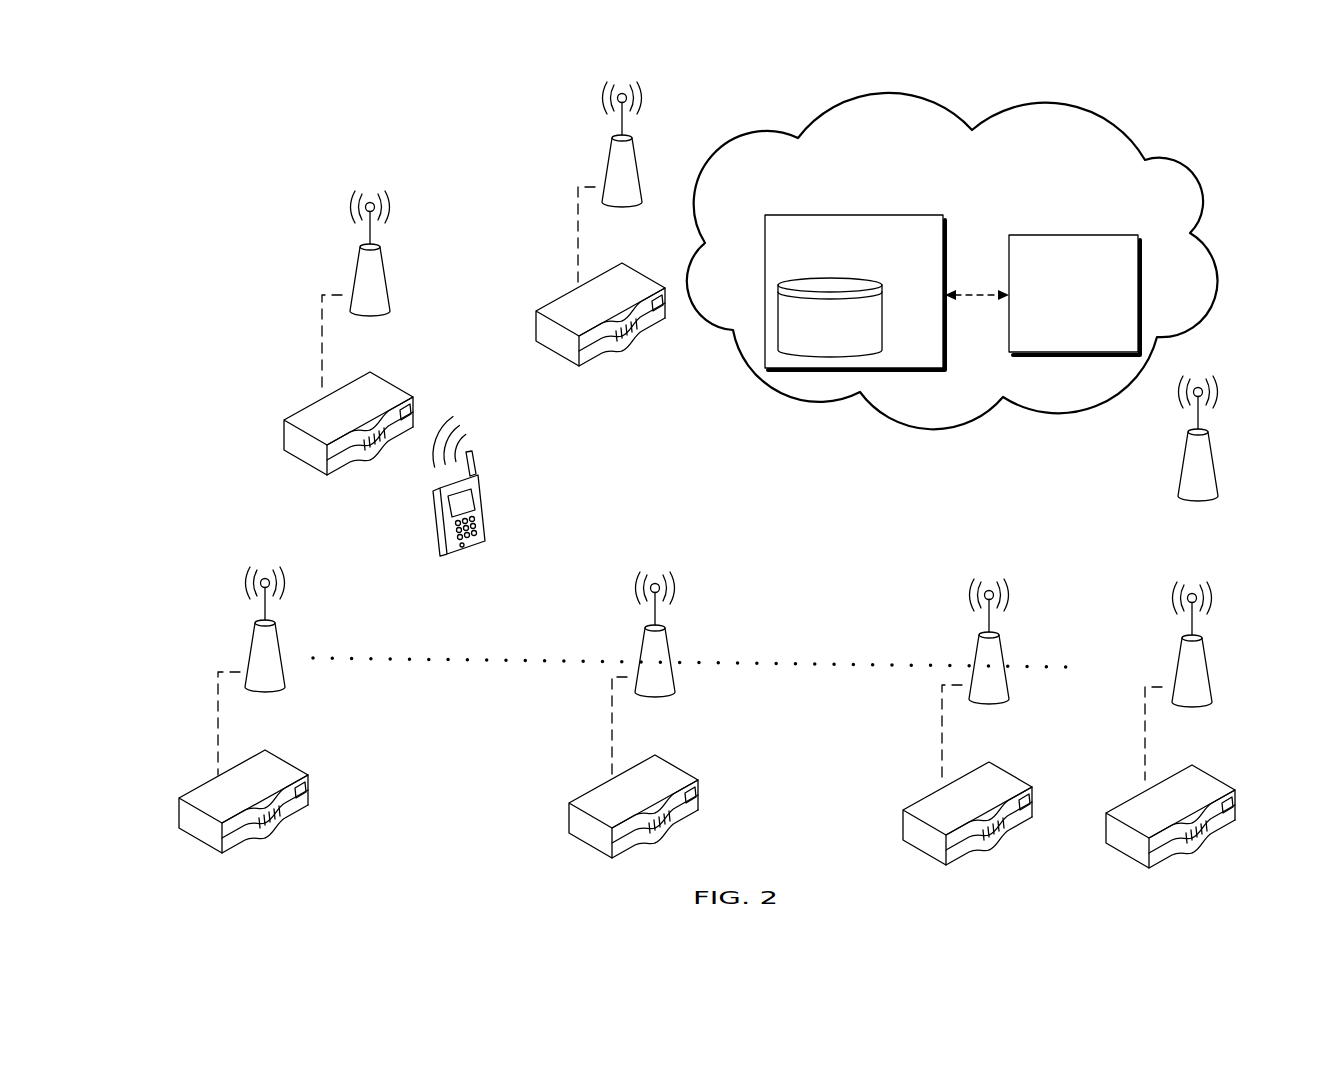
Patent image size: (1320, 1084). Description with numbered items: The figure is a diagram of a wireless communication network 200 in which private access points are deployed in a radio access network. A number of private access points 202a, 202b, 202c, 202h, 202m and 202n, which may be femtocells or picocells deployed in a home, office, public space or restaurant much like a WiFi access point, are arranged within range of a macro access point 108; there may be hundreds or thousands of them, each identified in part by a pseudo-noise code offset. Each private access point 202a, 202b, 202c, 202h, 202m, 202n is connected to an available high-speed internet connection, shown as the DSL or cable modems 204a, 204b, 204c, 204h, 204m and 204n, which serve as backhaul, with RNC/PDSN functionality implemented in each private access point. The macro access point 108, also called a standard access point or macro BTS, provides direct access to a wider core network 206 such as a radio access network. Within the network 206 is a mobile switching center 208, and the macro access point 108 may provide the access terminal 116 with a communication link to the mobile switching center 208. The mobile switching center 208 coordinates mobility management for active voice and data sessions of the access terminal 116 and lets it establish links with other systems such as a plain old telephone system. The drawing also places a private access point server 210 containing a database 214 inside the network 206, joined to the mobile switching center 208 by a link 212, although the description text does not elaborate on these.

The wireless communication network 200 is at (220, 153).
The private access point 202a is at (604, 170).
The private access point 202b is at (352, 277).
The private access point 202c is at (249, 650).
The private access point 202h is at (637, 655).
The private access point 202m is at (970, 663).
The private access point 202n is at (1173, 668).
The DSL or cable modem 204a is at (545, 305).
The DSL or cable modem 204b is at (297, 412).
The DSL or cable modem 204c is at (196, 790).
The DSL or cable modem 204h is at (583, 795).
The DSL or cable modem 204m is at (917, 802).
The DSL or cable modem 204n is at (1118, 805).
The access terminal 116 is at (470, 555).
The macro access point 108 is at (1216, 452).
The core network 206 is at (965, 201).
The private access point server 210 is at (930, 358).
The database 214 is at (848, 349).
The mobile switching center 208 is at (1123, 338).
The communication link 212 is at (960, 292).